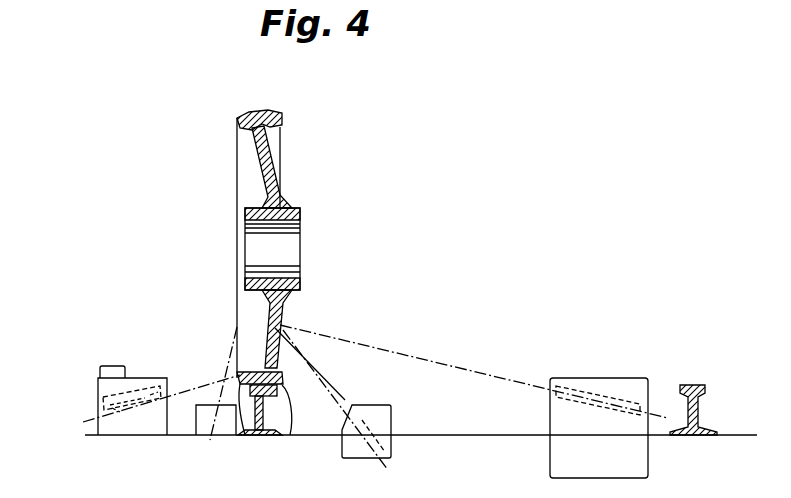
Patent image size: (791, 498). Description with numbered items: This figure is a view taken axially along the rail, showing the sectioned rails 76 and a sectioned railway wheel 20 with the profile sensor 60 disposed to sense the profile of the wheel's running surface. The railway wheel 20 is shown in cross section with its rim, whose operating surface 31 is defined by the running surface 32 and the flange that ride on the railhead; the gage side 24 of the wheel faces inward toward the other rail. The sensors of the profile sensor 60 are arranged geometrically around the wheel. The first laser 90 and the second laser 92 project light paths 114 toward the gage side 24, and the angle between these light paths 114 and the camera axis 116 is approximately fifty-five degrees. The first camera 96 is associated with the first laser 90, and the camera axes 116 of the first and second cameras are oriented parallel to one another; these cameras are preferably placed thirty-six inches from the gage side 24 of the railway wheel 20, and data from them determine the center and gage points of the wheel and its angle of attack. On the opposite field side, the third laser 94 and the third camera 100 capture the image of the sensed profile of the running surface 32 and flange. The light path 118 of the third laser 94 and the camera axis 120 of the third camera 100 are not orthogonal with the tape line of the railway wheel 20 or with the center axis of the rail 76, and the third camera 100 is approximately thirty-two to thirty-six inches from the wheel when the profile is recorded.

The railway wheel 20 is at (243, 119).
The operating surface 31 is at (255, 112).
The gage side 24 is at (284, 172).
The running surface 32 is at (246, 438).
The rail 76 is at (263, 438).
The profile sensor 60 is at (207, 305).
The camera 3 100 is at (94, 419).
The camera axis 120 is at (185, 378).
The laser 3 94 is at (212, 425).
The light path 118 is at (240, 372).
The light paths 114 is at (340, 398).
The laser 2 92 is at (376, 418).
The laser 1 90 is at (360, 448).
The camera axis 116 is at (388, 356).
The camera 1 96 is at (598, 394).